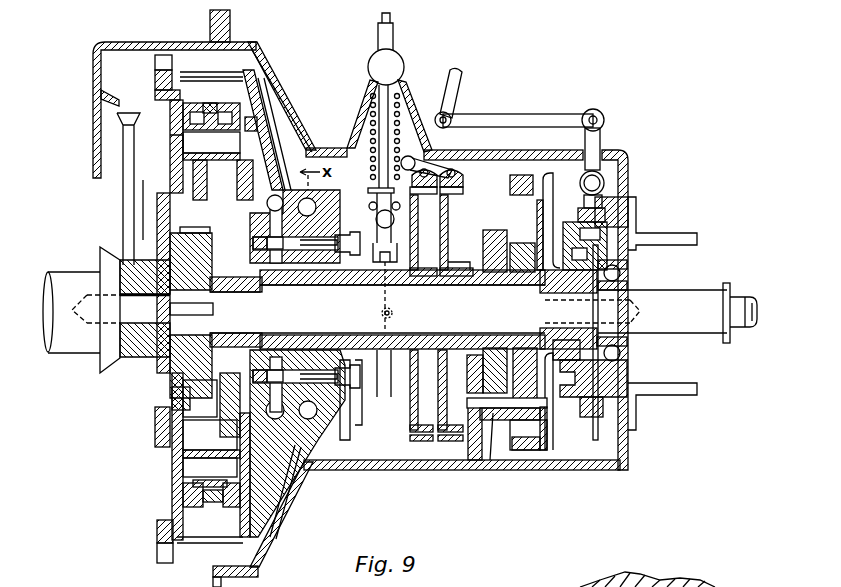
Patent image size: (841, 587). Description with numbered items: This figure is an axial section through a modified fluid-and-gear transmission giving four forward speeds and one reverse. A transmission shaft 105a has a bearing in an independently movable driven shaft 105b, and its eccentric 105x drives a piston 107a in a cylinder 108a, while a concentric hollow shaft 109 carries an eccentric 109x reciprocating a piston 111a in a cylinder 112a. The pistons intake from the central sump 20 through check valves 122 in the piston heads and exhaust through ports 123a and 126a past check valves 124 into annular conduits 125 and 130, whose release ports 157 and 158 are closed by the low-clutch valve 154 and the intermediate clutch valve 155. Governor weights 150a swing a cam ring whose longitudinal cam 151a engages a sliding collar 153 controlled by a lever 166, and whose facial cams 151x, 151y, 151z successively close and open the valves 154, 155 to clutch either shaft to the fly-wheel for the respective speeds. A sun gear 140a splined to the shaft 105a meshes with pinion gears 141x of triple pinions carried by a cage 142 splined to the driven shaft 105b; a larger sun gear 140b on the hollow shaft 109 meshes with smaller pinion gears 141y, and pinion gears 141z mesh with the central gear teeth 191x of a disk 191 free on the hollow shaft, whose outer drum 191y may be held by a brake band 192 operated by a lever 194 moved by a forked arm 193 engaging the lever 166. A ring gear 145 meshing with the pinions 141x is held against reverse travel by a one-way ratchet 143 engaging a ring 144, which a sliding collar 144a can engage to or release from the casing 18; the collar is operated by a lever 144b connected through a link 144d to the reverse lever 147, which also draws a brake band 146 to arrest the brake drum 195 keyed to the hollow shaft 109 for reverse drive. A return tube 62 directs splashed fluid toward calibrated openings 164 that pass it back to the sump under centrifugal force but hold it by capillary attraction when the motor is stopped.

The casing 18 is at (628, 166).
The central sump 20 is at (197, 468).
The return tube 62 is at (123, 193).
The transmission shaft 105a is at (446, 302).
The driven shaft 105b is at (695, 295).
The eccentric 105x is at (150, 255).
The piston 107a is at (204, 214).
The cylinder 108a is at (173, 145).
The concentric hollow shaft 109 is at (333, 287).
The eccentric 109x is at (231, 331).
The piston 111a is at (210, 467).
The cylinder 112a is at (211, 439).
The check valve 122 is at (206, 108).
The port 123a is at (276, 140).
The check valve 124 is at (262, 105).
The annular conduit 125 is at (285, 150).
The port 126a is at (300, 480).
The annular conduit 130 is at (318, 466).
The sun gear 140a is at (520, 245).
The sun gear 140b is at (493, 230).
The pinion gear 141x is at (557, 437).
The pinion gear 141y is at (525, 450).
The pinion gear 141z is at (478, 462).
The cage 142 is at (620, 353).
The one-way ratchet 143 is at (620, 258).
The ring 144 is at (600, 233).
The sliding collar 144a is at (605, 198).
The lever 144b is at (600, 140).
The link 144d is at (510, 118).
The ring gear 145 is at (533, 173).
The brake band 146 is at (405, 443).
The reverse lever 147 is at (458, 84).
The governor weight 150a is at (352, 437).
The longitudinal cam 151a is at (365, 398).
The facial cam 151x is at (310, 230).
The facial cam 151y is at (355, 412).
The facial cam 151z is at (376, 226).
The sliding collar 153 is at (362, 376).
The low-clutch valve 154 is at (296, 287).
The intermediate clutch valve 155 is at (335, 348).
The release port 157 is at (262, 292).
The release port 158 is at (300, 348).
The calibrated openings 164 is at (143, 180).
The lever 166 is at (393, 35).
The disk 191 is at (457, 235).
The gear teeth 191x is at (475, 266).
The outer drum 191y is at (455, 196).
The brake band 192 is at (462, 170).
The forked arm 193 is at (368, 192).
The lever 194 is at (450, 175).
The brake drum 195 is at (419, 218).